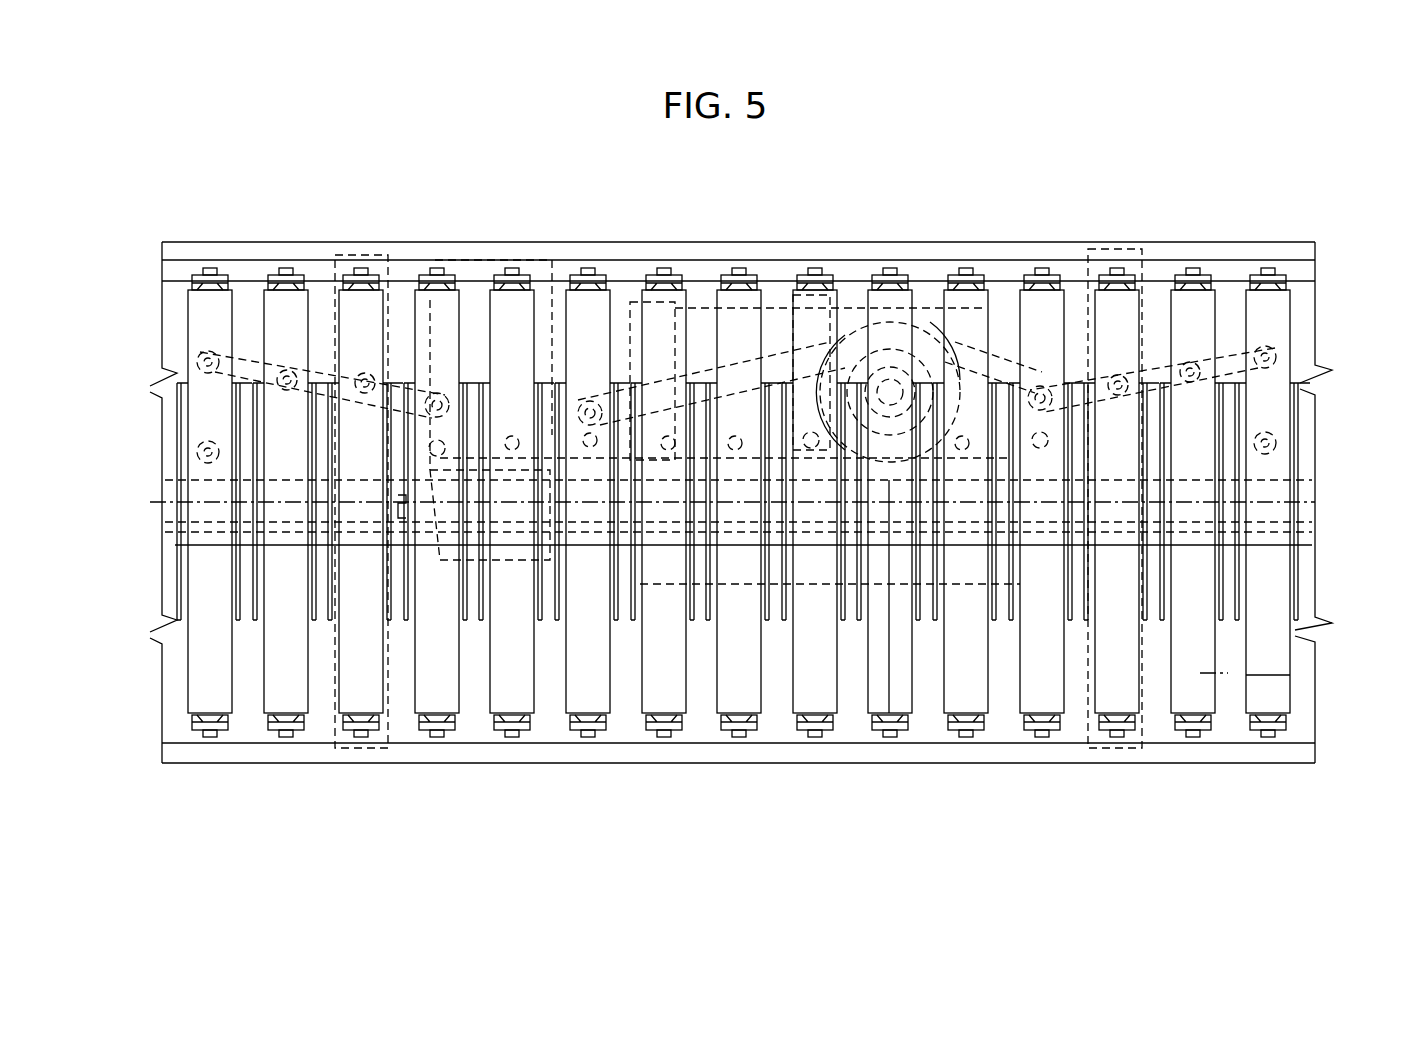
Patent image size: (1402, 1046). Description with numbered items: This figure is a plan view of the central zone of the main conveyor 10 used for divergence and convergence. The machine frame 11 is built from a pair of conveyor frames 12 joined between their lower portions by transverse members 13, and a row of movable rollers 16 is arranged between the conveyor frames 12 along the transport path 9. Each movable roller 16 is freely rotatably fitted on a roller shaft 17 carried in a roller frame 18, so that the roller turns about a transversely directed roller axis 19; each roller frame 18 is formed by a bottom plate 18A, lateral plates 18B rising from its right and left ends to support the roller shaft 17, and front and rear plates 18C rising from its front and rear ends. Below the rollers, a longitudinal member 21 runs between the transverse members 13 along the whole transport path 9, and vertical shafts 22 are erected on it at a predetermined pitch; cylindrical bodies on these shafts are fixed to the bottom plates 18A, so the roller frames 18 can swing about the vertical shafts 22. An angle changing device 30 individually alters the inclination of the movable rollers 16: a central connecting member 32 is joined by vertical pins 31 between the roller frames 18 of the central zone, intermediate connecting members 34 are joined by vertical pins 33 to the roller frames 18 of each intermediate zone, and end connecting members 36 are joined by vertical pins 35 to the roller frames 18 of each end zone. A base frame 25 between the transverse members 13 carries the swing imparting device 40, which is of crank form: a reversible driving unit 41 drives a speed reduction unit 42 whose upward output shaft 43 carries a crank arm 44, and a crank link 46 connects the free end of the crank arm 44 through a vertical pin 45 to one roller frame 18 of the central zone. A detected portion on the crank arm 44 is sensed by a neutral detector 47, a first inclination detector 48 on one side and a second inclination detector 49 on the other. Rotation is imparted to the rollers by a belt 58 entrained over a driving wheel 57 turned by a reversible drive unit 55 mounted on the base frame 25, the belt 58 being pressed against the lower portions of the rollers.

The transport path 9 is at (160, 502).
The main conveyor 10 is at (895, 192).
The machine frame 11 is at (1187, 244).
The conveyor frame 12 is at (1272, 245).
The transverse member 13 is at (360, 760).
The movable roller 16 is at (268, 700).
The roller shaft 17 is at (660, 738).
The roller frame 18 is at (497, 736).
The bottom plate 18A is at (1290, 721).
The lateral plate 18B is at (1290, 282).
The front and rear plate 18C is at (1295, 592).
The roller axis 19 is at (1290, 673).
The longitudinal member 21 is at (1290, 500).
The vertical shaft 22 is at (168, 525).
The base frame 25 is at (1005, 278).
The angle changing device 30 is at (706, 300).
The vertical pin 31 is at (672, 450).
The central connecting member 32 is at (590, 560).
The vertical pin 33 is at (440, 396).
The intermediate connecting member 34 is at (318, 368).
The vertical pin 35 is at (205, 456).
The end connecting member 36 is at (205, 440).
The swing imparting device 40 is at (820, 300).
The driving unit 41 is at (640, 300).
The speed reduction unit 42 is at (946, 317).
The output shaft 43 is at (962, 370).
The crank arm 44 is at (854, 330).
The vertical pin 45 is at (590, 400).
The crank link 46 is at (773, 355).
The neutral detector 47 is at (910, 300).
The first inclination detector 48 is at (705, 448).
The second inclination detector 49 is at (978, 460).
The reversible drive unit 55 is at (483, 260).
The driving wheel 57 is at (440, 562).
The belt 58 is at (200, 548).